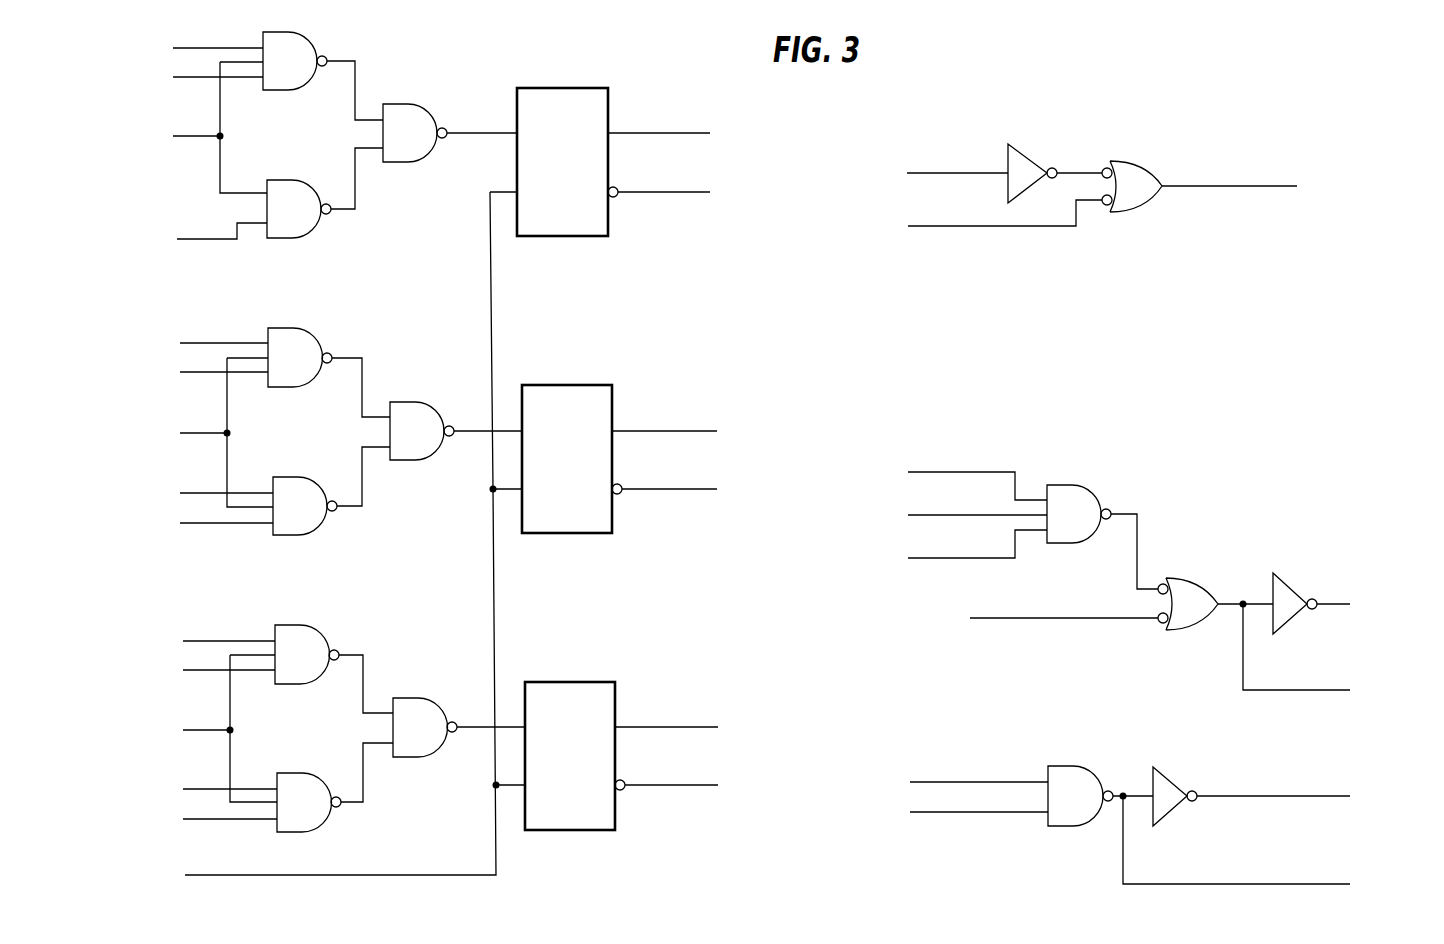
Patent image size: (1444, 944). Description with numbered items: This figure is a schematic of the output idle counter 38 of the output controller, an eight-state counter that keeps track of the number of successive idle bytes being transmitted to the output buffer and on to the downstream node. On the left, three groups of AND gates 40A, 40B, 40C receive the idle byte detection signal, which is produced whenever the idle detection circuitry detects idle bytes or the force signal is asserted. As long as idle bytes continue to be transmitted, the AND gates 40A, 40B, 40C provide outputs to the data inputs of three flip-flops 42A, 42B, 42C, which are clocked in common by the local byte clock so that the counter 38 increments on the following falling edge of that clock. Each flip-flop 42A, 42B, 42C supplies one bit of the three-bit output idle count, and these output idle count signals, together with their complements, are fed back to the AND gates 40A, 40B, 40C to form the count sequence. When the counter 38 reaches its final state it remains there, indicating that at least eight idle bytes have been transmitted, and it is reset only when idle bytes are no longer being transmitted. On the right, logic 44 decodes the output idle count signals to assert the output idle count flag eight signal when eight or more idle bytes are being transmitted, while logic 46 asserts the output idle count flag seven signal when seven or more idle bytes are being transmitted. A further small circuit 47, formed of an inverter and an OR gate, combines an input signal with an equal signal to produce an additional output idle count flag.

The output idle counter 38 is at (573, 857).
The AND gate 40A is at (433, 88).
The AND gate 40B is at (376, 489).
The AND gate 40C is at (391, 784).
The flip-flop 42A is at (565, 102).
The flip-flop 42B is at (570, 398).
The flip-flop 42C is at (573, 695).
The logic 44 is at (1050, 851).
The logic 46 is at (1097, 641).
The inverter and OR gate circuit 47 is at (1120, 242).